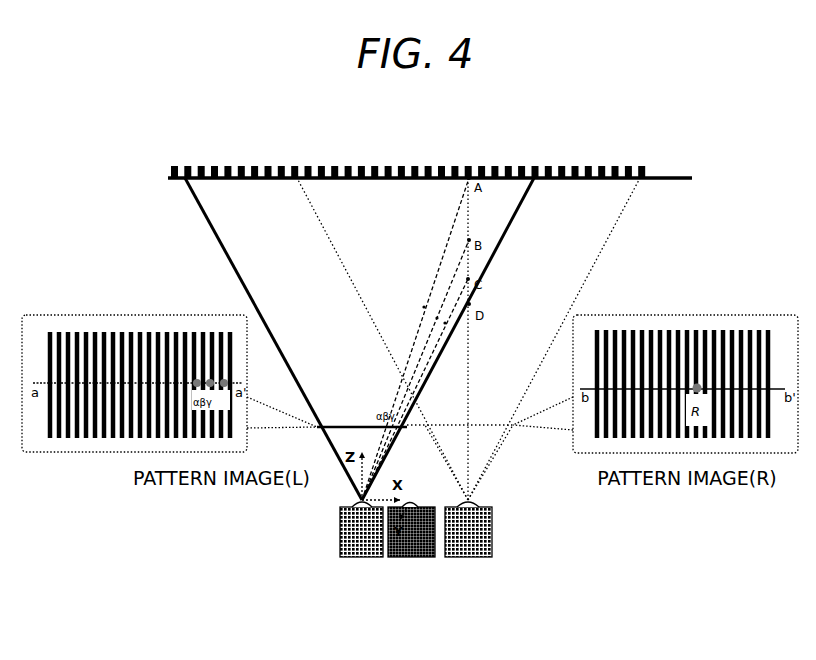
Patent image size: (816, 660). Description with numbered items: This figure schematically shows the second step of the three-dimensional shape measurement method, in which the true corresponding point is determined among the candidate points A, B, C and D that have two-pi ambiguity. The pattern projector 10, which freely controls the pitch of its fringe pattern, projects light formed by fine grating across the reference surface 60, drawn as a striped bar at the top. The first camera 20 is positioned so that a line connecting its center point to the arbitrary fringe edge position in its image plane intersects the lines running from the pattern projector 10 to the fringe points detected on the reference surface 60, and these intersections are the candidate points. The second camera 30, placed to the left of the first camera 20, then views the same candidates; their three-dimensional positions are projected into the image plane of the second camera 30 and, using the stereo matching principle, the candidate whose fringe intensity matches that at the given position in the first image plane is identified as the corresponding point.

The reference surface 60 is at (176, 178).
The second camera 30 is at (345, 557).
The pattern projector 10 is at (405, 557).
The first camera 20 is at (468, 557).